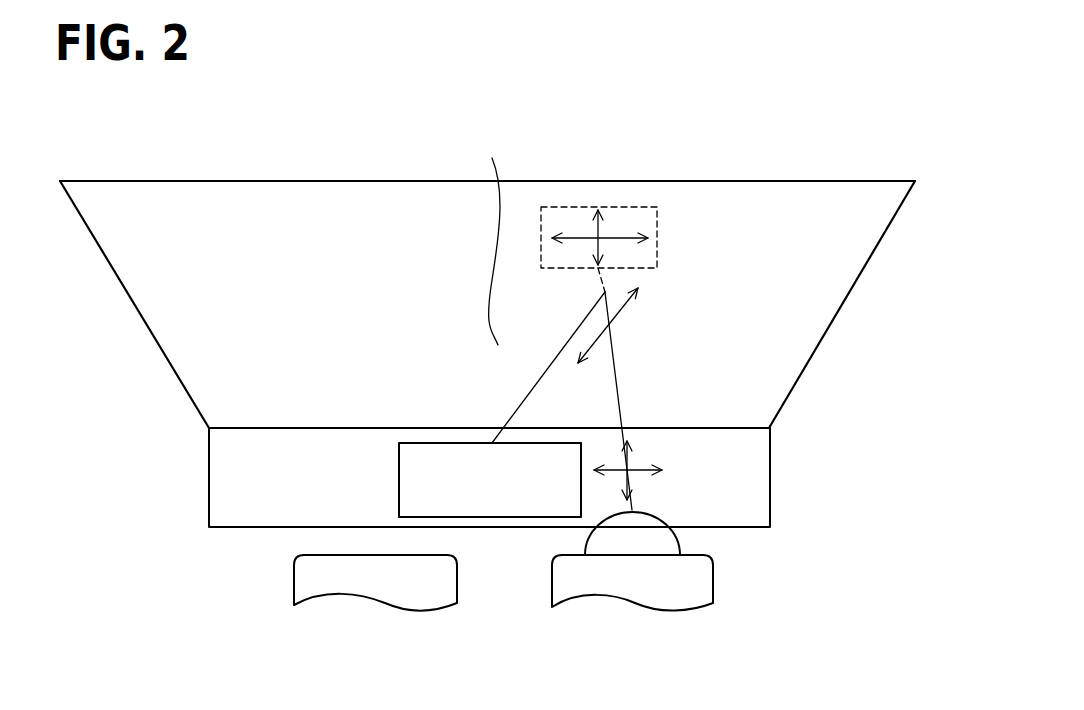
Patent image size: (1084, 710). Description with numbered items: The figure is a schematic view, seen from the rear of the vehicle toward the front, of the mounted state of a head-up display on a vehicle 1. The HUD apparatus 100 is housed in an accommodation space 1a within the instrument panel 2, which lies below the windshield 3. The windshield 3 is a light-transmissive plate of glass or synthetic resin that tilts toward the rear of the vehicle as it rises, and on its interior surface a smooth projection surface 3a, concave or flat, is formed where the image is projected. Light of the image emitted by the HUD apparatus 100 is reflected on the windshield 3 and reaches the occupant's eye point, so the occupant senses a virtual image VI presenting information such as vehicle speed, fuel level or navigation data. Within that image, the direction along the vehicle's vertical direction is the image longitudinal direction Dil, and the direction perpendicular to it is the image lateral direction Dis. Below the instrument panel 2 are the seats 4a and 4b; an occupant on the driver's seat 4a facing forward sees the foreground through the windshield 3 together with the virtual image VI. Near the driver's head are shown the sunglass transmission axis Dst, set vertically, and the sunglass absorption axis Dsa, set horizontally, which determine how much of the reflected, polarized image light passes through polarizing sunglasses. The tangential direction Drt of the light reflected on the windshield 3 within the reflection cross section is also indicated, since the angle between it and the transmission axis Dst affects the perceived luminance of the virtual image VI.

The vehicle 1 is at (213, 170).
The accommodation space 1a is at (399, 497).
The instrument panel 2 is at (209, 474).
The windshield 3 is at (567, 181).
The projection surface 3a is at (490, 237).
The virtual image VI is at (657, 238).
The image longitudinal direction Dil is at (600, 233).
The image lateral direction Dis is at (620, 238).
The tangential direction Drt is at (608, 322).
The HUD apparatus 100 is at (399, 462).
The sunglass transmission axis Dst is at (630, 462).
The sunglass absorption axis Dsa is at (636, 472).
The driver's seat 4a is at (716, 590).
The seat 4b is at (294, 586).